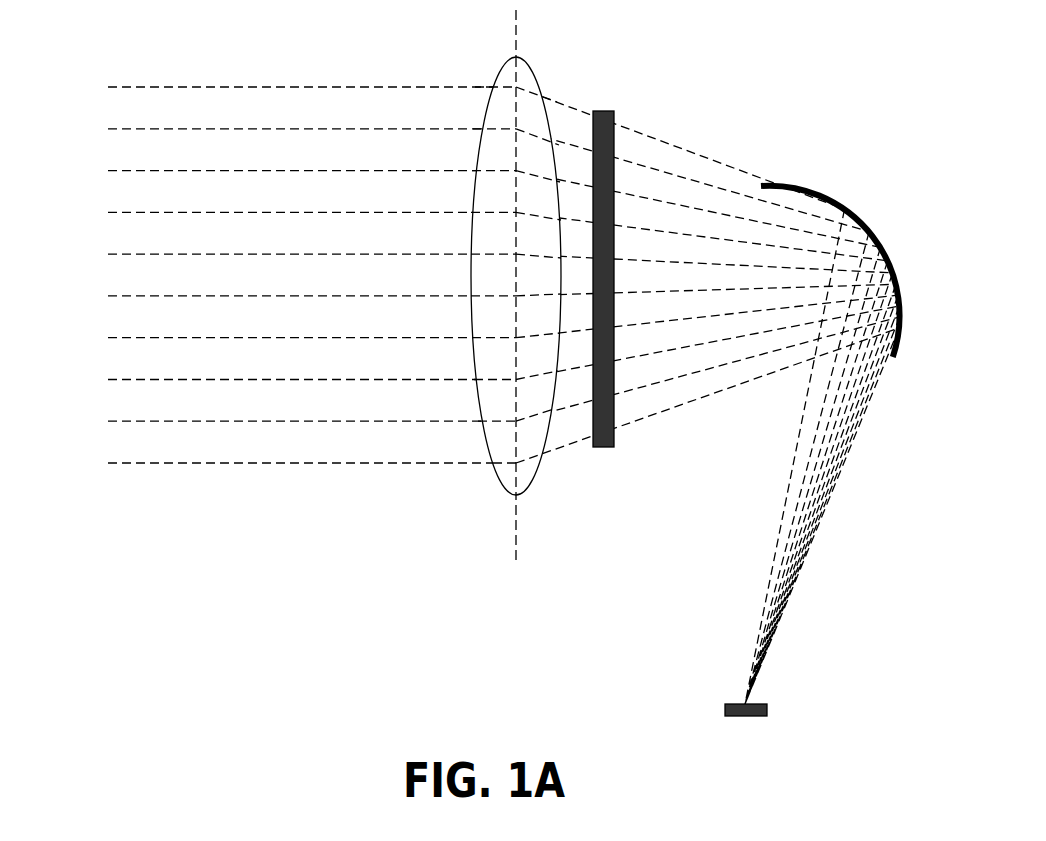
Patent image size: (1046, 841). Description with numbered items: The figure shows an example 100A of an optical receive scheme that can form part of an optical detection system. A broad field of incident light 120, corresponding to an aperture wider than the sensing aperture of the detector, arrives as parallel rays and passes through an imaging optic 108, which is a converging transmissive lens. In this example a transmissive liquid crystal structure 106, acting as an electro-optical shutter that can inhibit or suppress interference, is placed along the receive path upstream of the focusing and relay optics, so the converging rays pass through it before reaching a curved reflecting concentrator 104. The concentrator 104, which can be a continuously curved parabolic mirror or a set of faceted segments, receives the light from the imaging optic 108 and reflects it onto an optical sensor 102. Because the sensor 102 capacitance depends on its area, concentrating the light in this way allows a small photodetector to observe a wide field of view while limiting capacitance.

The example optical receive scheme 100A is at (680, 72).
The optical sensor 102 is at (728, 704).
The reflecting concentrator 104 is at (837, 202).
The transmissive liquid crystal structure 106 is at (603, 111).
The imaging optic 108 is at (496, 80).
The incident light 120 is at (98, 465).